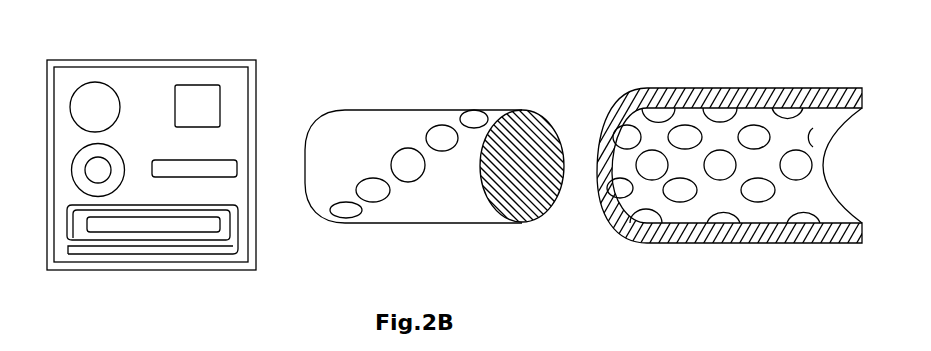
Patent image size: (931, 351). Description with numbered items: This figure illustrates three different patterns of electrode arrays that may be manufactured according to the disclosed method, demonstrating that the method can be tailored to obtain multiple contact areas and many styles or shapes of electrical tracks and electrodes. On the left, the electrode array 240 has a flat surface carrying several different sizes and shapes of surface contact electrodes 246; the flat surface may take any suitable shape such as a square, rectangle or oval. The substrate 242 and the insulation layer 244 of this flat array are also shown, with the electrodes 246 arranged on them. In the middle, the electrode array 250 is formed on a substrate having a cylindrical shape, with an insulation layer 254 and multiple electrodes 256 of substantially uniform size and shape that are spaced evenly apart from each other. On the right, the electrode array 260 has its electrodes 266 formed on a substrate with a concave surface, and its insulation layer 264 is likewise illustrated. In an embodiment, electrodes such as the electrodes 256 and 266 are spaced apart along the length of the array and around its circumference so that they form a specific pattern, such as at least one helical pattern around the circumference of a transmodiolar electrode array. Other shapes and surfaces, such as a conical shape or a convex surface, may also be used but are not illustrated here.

The electrode array 240 is at (197, 157).
The substrate 242 is at (242, 65).
The insulation layer 244 is at (170, 75).
The surface contact electrodes 246 is at (202, 167).
The electrode array 250 is at (491, 182).
The insulation layer 254 is at (362, 130).
The electrodes 256 is at (408, 165).
The electrode array 260 is at (717, 172).
The insulation layer 264 is at (673, 93).
The electrodes 266 is at (722, 163).